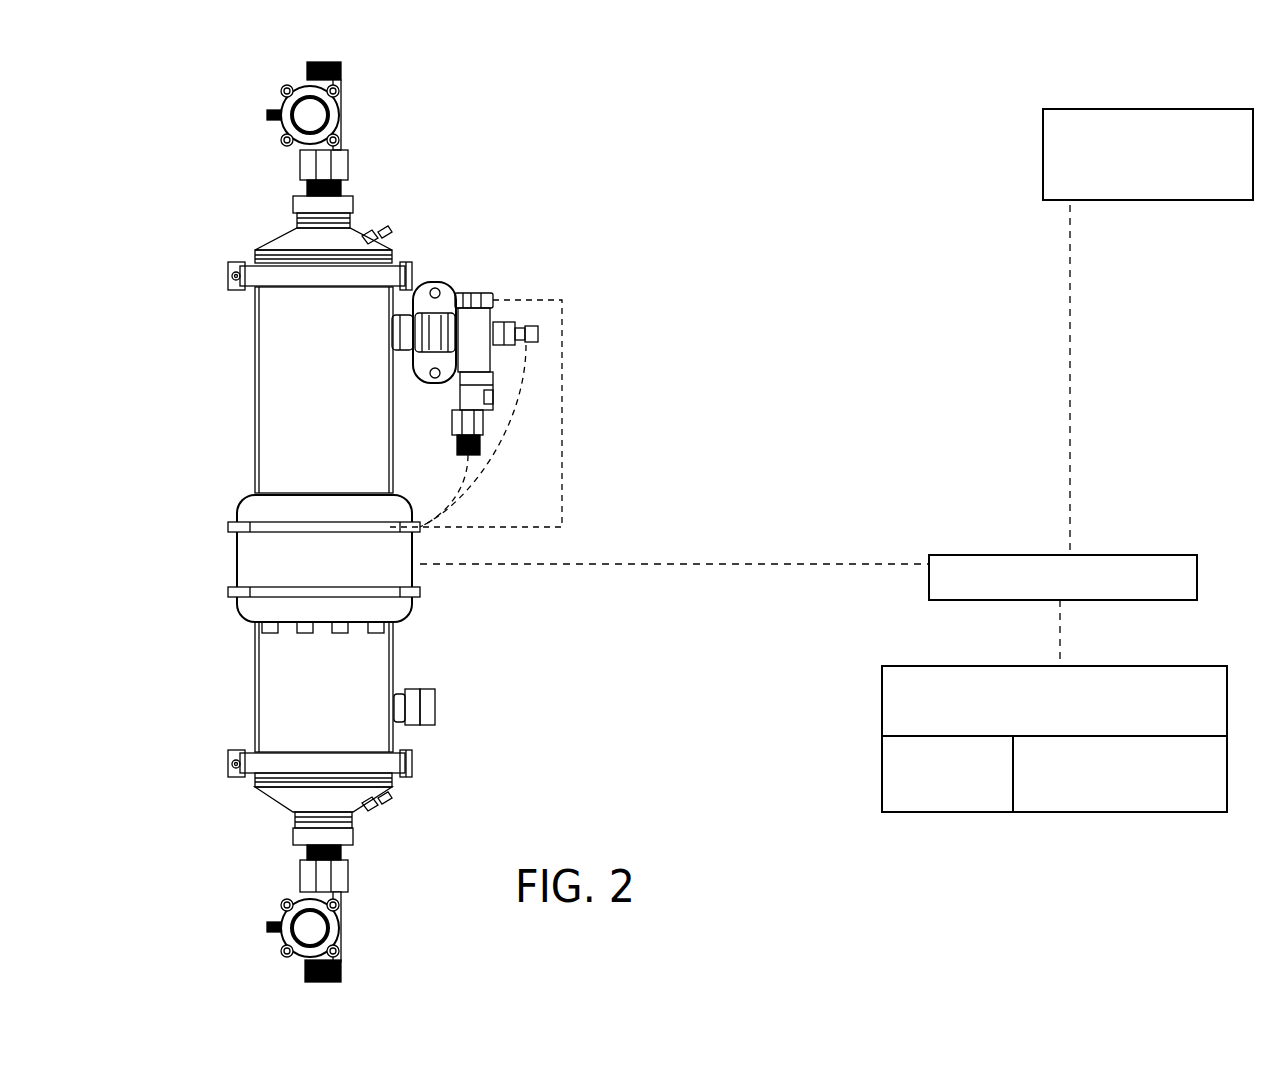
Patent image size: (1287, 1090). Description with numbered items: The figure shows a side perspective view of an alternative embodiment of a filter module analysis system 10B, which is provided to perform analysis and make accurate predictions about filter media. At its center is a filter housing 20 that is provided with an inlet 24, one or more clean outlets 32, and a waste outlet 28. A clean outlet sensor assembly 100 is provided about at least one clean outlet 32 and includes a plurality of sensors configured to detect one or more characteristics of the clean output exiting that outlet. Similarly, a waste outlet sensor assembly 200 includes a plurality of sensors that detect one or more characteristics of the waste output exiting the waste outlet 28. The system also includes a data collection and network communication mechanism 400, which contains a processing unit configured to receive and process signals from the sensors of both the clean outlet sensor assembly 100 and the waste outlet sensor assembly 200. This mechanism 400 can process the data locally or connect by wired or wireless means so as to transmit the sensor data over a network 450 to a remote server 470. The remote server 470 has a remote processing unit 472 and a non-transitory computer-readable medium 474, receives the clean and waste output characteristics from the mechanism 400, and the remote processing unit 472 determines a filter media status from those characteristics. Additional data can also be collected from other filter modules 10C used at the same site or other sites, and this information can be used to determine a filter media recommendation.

The filter module analysis system 10B is at (660, 178).
The other filter modules 10C is at (1045, 150).
The filter housing 20 is at (280, 360).
The inlet 24 is at (300, 843).
The waste outlet 28 is at (300, 194).
The clean outlet 32 is at (425, 284).
The clean outlet sensor assembly 100 is at (575, 315).
The waste outlet sensor assembly 200 is at (392, 152).
The data collection and network communication mechanism 400 is at (243, 612).
The network 450 is at (1011, 558).
The remote server 470 is at (882, 736).
The remote processing unit 472 is at (947, 812).
The non-transitory computer-readable medium 474 is at (1120, 812).